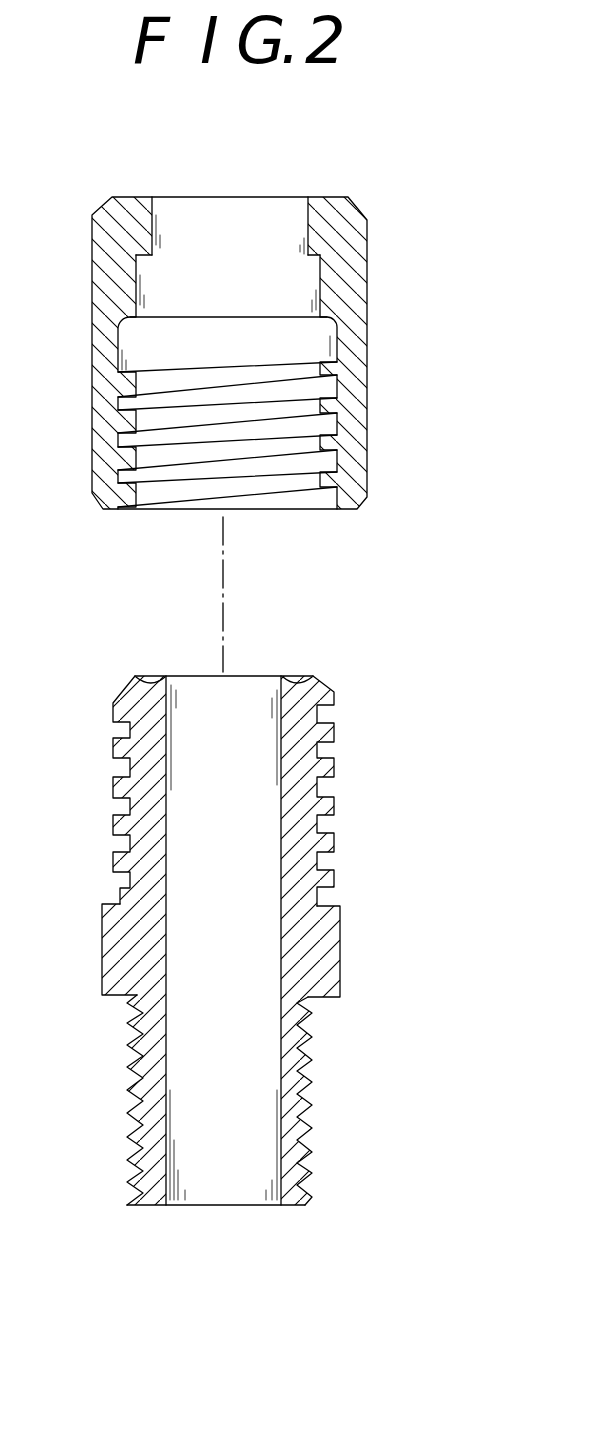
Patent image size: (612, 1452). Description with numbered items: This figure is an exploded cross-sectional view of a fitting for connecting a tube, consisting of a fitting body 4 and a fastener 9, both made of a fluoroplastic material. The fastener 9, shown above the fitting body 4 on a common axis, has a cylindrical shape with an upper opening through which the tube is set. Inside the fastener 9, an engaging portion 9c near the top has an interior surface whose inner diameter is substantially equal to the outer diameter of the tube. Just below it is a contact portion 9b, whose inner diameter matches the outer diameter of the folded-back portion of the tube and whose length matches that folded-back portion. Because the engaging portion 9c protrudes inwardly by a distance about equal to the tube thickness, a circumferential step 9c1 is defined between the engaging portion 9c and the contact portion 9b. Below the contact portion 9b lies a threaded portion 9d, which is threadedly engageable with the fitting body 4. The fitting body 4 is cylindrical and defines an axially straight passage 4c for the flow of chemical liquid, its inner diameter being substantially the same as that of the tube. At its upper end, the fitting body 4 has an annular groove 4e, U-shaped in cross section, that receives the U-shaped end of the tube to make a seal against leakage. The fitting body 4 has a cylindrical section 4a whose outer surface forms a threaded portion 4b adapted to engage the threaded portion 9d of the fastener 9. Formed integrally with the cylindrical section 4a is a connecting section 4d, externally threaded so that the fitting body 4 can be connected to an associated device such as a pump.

The fastener 9 is at (289, 344).
The contact portion 9b is at (243, 302).
The engaging portion 9c is at (257, 230).
The circumferential step 9c1 is at (152, 258).
The threaded portion 9d is at (281, 483).
The fitting body 4 is at (295, 957).
The cylindrical section 4a is at (301, 760).
The threaded portion 4b is at (334, 807).
The passage 4c is at (232, 1128).
The connecting section 4d is at (302, 1147).
The annular groove 4e is at (290, 675).